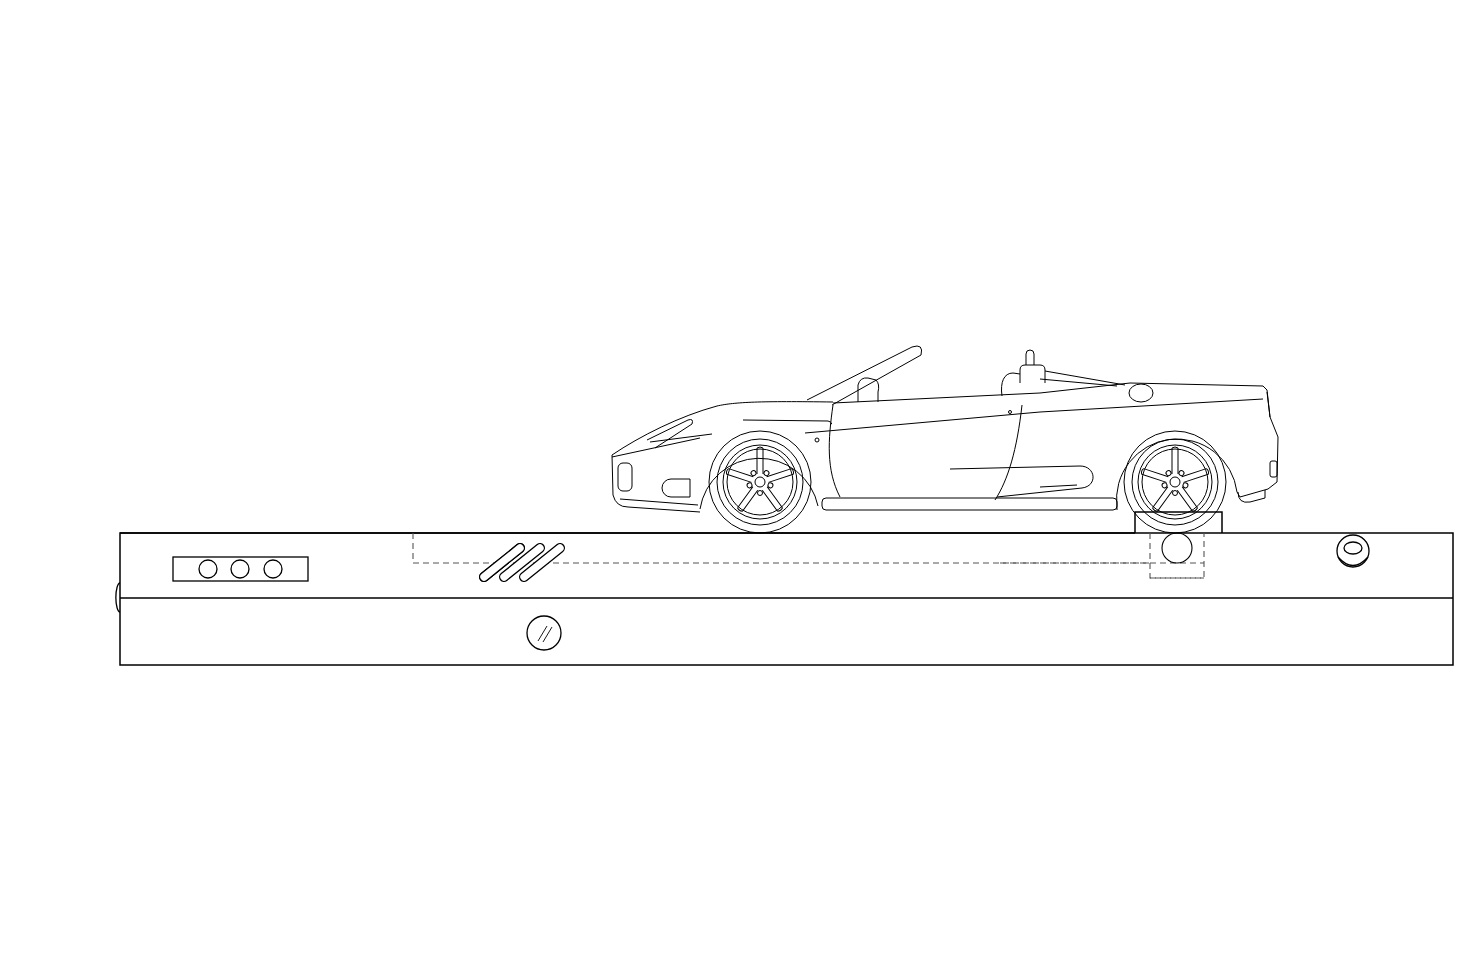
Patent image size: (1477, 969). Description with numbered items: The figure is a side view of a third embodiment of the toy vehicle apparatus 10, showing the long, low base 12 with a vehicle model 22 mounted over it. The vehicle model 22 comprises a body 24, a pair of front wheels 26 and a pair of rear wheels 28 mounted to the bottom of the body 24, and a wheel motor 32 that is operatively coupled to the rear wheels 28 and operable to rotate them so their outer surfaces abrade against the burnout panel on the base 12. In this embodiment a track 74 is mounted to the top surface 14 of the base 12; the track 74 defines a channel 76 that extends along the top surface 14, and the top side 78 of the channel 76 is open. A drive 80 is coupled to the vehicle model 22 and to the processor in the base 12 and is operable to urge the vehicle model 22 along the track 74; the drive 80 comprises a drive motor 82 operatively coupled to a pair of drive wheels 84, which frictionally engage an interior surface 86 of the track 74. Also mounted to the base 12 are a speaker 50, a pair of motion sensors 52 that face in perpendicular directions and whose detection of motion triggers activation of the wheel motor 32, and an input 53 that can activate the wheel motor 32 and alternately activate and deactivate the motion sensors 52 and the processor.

The toy vehicle apparatus 10 is at (608, 253).
The base 12 is at (1422, 642).
The top surface 14 is at (372, 533).
The vehicle model 22 is at (945, 368).
The body 24 is at (933, 438).
The front wheels 26 is at (746, 446).
The rear wheels 28 is at (1165, 442).
The wheel motor 32 is at (1222, 522).
The speaker 50 is at (486, 582).
The motion sensors 52 is at (548, 638).
The input 53 is at (217, 533).
The track 74 is at (615, 540).
The channel 76 is at (478, 517).
The top side 78 is at (542, 509).
The drive 80 is at (1141, 604).
The drive motor 82 is at (1185, 575).
The drive wheels 84 is at (1190, 552).
The interior surface 86 is at (1110, 565).